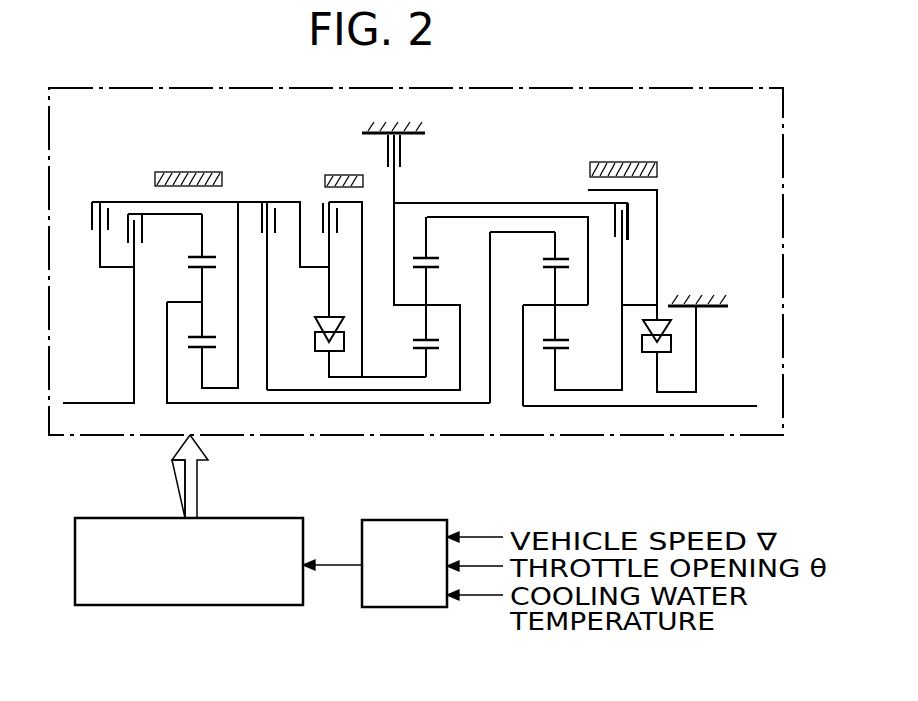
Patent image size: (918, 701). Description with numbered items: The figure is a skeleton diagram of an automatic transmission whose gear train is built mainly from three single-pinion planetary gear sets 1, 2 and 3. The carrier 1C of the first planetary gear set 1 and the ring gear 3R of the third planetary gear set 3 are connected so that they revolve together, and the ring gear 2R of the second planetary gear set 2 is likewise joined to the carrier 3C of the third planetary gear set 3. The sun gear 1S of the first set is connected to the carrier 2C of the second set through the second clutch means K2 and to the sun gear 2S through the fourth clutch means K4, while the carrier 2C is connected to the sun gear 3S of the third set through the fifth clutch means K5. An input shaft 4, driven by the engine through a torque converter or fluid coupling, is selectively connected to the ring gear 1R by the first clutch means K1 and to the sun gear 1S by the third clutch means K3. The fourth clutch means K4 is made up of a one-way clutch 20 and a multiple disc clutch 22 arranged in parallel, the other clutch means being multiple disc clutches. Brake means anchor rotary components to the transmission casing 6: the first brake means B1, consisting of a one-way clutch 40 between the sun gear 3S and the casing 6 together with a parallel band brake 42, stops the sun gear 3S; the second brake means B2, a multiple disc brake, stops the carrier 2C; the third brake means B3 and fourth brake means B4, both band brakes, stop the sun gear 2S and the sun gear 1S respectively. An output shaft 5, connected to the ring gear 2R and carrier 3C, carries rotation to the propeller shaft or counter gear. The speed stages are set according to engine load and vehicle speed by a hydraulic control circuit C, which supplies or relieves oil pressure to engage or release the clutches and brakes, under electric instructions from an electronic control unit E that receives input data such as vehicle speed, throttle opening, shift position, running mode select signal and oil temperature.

The first planetary gear set 1 is at (185, 392).
The second planetary gear set 2 is at (431, 392).
The third planetary gear set 3 is at (567, 394).
The input shaft 4 is at (92, 398).
The output shaft 5 is at (718, 406).
The transmission casing 6 is at (405, 127).
The one-way clutch 20 is at (325, 322).
The multiple disc clutch 22 is at (322, 218).
The one-way clutch 40 is at (658, 313).
The band brake 42 is at (627, 163).
The first brake means B1 is at (666, 172).
The second brake means B2 is at (393, 200).
The third brake means B3 is at (344, 168).
The fourth brake means B4 is at (188, 167).
The first clutch means K1 is at (165, 234).
The second clutch means K2 is at (269, 283).
The third clutch means K3 is at (109, 222).
The fourth clutch means K4 is at (343, 226).
The fifth clutch means K5 is at (634, 233).
The ring gear 1R is at (210, 248).
The carrier 1C is at (179, 289).
The sun gear 1S is at (209, 356).
The ring gear 2R is at (437, 250).
The carrier 2C is at (430, 292).
The sun gear 2S is at (434, 358).
The ring gear 3R is at (540, 253).
The carrier 3C is at (550, 291).
The sun gear 3S is at (568, 359).
The hydraulic control circuit C is at (167, 608).
The electronic control unit E is at (405, 611).